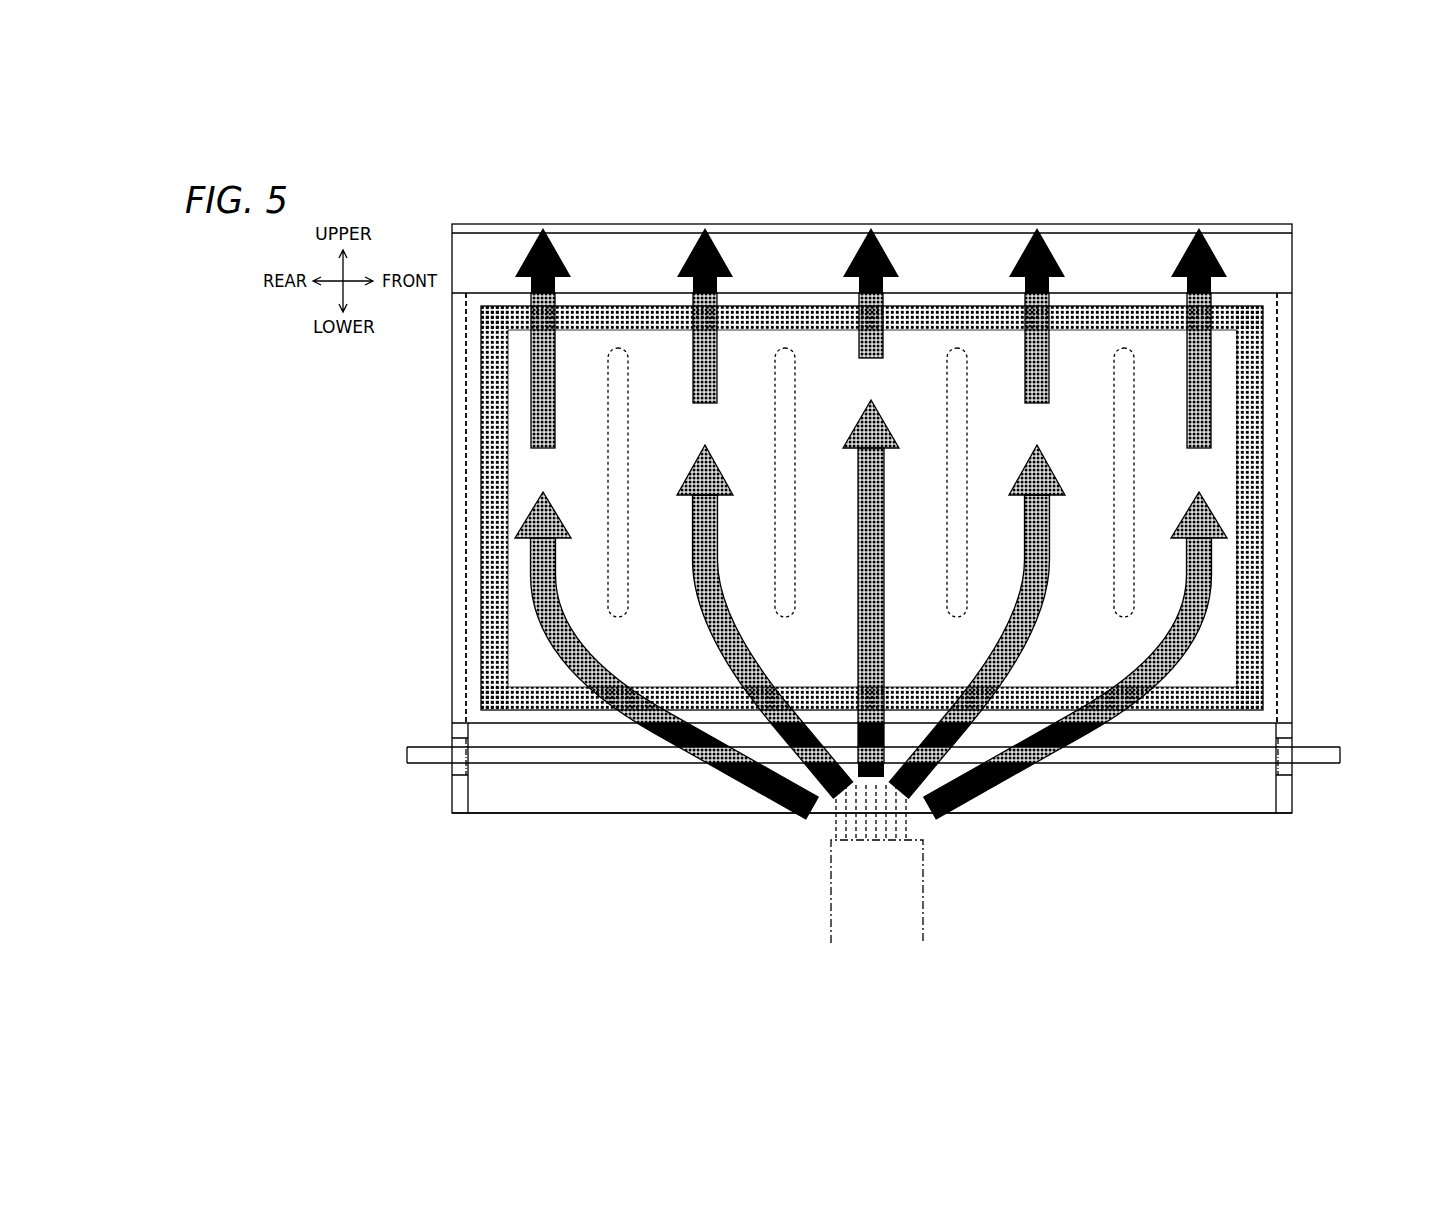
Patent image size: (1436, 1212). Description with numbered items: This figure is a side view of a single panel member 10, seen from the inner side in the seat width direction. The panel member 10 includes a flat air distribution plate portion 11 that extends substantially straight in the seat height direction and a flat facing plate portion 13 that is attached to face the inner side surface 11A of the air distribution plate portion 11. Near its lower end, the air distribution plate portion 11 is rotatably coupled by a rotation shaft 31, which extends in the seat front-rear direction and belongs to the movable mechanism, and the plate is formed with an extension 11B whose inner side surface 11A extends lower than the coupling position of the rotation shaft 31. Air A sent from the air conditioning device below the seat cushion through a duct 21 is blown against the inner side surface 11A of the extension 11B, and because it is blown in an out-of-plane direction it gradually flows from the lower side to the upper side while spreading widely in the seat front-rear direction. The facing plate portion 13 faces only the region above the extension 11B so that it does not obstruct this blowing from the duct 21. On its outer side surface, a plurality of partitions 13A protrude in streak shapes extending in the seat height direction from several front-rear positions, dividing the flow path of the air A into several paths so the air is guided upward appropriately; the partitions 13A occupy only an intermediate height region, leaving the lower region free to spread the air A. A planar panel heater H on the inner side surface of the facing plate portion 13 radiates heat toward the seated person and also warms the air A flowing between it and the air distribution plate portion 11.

The panel member 10 is at (1305, 398).
The facing plate portion 13 is at (472, 427).
The air distribution plate portion 11 is at (513, 562).
The panel heater H is at (493, 482).
The inner side surface 11A is at (517, 613).
The partitions 13A is at (1133, 458).
The air A is at (996, 778).
The extension 11B is at (633, 797).
The rotation shaft 31 is at (1138, 753).
The duct 21 is at (918, 900).